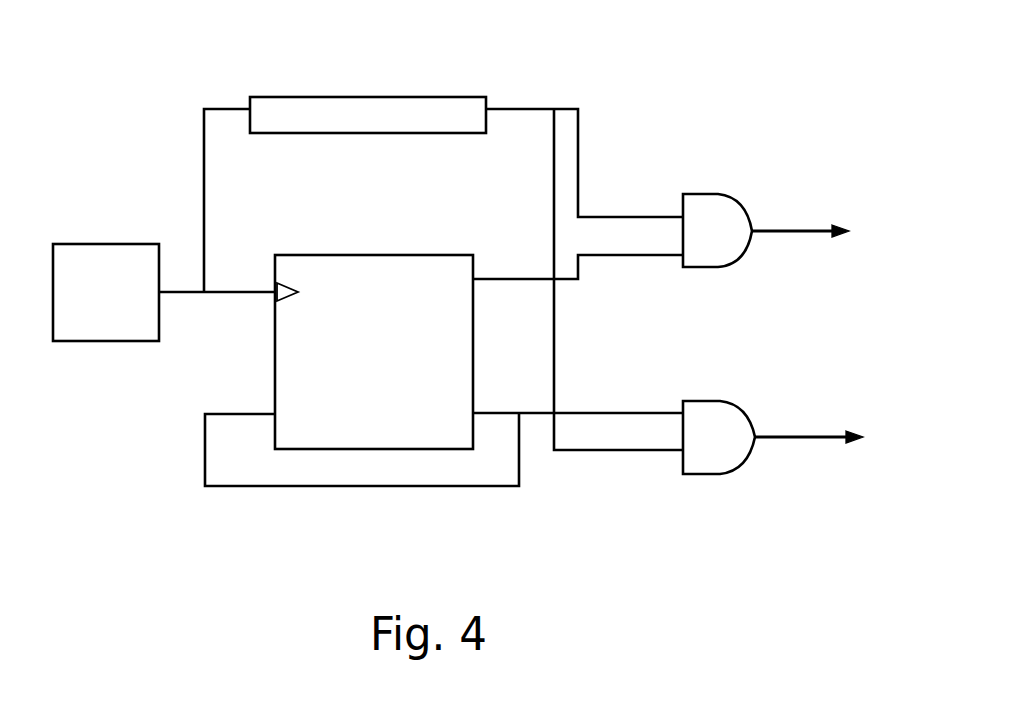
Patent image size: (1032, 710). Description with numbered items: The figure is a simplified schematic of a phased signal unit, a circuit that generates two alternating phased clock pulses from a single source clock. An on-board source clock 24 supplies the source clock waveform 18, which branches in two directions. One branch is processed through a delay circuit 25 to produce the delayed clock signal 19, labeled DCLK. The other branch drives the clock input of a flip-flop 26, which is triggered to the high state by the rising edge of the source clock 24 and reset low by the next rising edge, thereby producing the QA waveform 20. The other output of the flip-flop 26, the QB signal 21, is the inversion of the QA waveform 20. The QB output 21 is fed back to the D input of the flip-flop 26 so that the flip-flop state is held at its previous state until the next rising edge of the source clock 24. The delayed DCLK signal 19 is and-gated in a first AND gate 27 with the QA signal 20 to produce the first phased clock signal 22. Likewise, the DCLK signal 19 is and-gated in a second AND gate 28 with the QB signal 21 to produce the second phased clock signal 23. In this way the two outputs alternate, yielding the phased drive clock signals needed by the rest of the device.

The source clock waveform 18 is at (204, 161).
The delayed clock signal 19 is at (523, 108).
The QA waveform 20 is at (490, 278).
The QB signal 21 is at (488, 413).
The phased clock signal CLK1 22 is at (770, 234).
The phased clock signal CLK2 23 is at (770, 442).
The source clock 24 is at (112, 243).
The delay circuit 25 is at (396, 97).
The flip-flop 26 is at (388, 255).
The AND gate 27 is at (747, 212).
The AND gate 28 is at (755, 425).